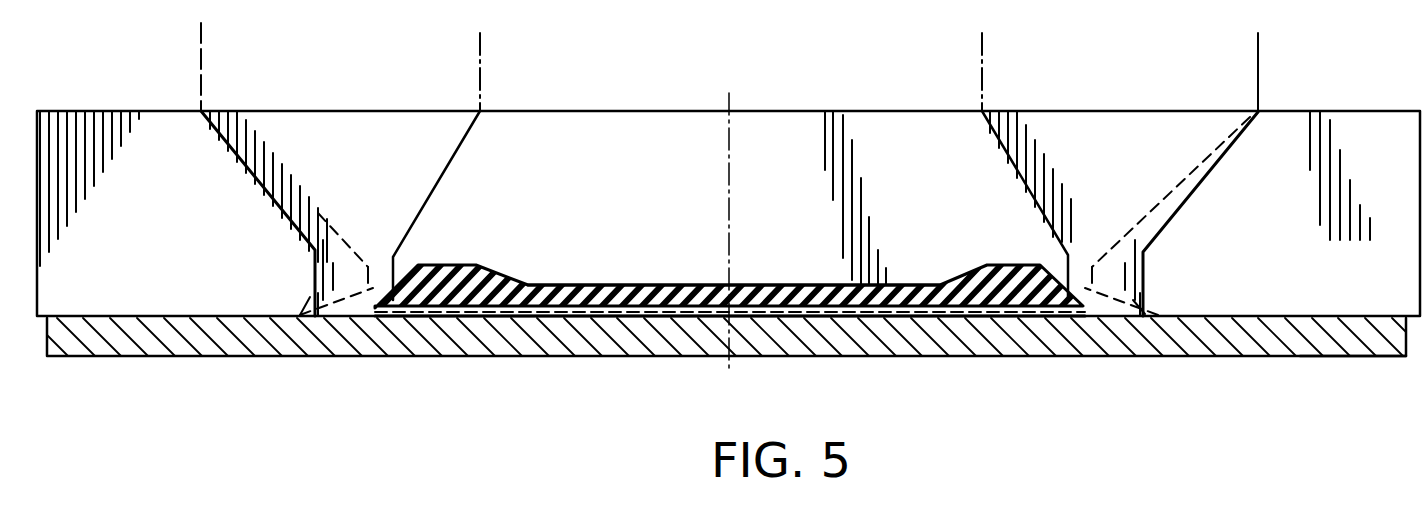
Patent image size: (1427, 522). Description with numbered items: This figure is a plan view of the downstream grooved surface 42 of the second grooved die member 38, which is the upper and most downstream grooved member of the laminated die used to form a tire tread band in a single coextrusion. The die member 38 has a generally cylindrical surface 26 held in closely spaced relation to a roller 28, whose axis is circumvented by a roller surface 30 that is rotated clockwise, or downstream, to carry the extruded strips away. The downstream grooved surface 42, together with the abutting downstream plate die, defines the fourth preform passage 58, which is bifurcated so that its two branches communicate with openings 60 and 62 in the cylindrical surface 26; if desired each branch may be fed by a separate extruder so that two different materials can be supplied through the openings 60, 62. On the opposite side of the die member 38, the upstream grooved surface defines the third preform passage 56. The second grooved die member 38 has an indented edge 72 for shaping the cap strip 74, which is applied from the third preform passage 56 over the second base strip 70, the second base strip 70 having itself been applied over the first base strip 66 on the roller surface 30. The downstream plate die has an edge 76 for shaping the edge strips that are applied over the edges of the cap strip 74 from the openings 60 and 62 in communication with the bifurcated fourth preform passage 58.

The cylindrical surface 26 is at (213, 318).
The roller 28 is at (1325, 362).
The roller surface 30 is at (1285, 316).
The second grooved die member 38 is at (1368, 112).
The downstream grooved surface 42 is at (1290, 133).
The third preform passage 56 is at (283, 213).
The fourth preform passage 58 is at (415, 133).
The opening 60 is at (1133, 300).
The opening 62 is at (307, 305).
The first base strip 66 is at (582, 318).
The second base strip 70 is at (810, 318).
The edge 72 is at (640, 285).
The cap strip 74 is at (757, 285).
The edge 76 is at (343, 300).